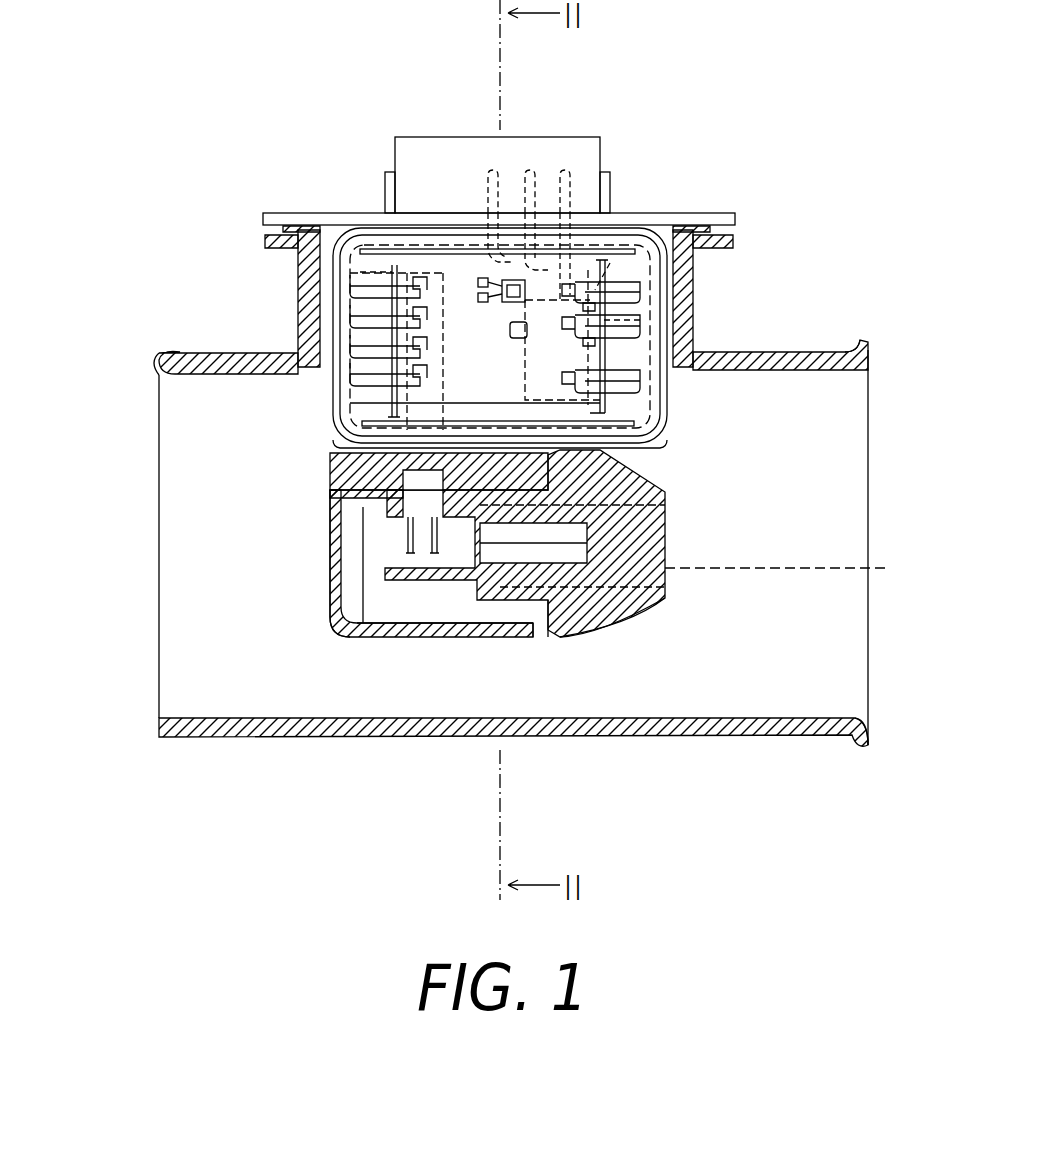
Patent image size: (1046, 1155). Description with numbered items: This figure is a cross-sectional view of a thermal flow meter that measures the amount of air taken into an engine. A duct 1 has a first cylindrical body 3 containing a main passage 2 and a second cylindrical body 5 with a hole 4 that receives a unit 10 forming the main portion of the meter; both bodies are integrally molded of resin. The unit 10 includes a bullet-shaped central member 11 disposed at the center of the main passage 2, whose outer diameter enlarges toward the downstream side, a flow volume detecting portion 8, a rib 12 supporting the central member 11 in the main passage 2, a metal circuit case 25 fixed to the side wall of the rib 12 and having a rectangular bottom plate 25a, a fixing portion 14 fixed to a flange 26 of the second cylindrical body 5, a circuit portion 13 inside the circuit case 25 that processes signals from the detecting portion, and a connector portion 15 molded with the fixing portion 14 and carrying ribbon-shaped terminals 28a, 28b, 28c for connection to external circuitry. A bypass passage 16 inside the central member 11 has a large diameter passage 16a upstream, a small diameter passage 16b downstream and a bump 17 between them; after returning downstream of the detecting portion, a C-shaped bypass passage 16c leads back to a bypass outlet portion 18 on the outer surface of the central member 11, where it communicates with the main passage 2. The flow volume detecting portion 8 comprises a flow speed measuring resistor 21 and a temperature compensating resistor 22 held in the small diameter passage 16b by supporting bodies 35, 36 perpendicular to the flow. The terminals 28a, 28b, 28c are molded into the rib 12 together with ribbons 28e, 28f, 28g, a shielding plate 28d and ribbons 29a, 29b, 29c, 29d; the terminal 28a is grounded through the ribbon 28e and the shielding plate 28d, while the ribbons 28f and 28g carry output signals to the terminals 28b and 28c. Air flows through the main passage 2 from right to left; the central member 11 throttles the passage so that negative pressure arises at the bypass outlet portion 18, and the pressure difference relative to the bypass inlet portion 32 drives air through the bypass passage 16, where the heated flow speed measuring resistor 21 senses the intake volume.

The duct 1 is at (882, 436).
The main passage 2 is at (852, 472).
The first cylindrical body 3 is at (863, 345).
The hole 4 is at (650, 250).
The second cylindrical body 5 is at (688, 262).
The flow volume detecting portion 8 is at (390, 557).
The unit 10 is at (308, 202).
The central member 11 is at (655, 612).
The rib 12 is at (330, 477).
The circuit portion 13 is at (455, 347).
The fixing portion 14 is at (268, 222).
The connector portion 15 is at (415, 135).
The bypass passage 16 is at (605, 612).
The large diameter passage 16a is at (888, 566).
The small diameter passage 16b is at (345, 572).
The bypass passage 16c is at (487, 622).
The bump 17 is at (522, 615).
The bypass outlet portion 18 is at (540, 626).
The flow speed measuring resistor 21 is at (435, 590).
The temperature compensating resistor 22 is at (408, 608).
The circuit case 25 is at (600, 352).
The bottom plate 25a is at (612, 412).
The flange 26 is at (280, 247).
The terminal 28a is at (490, 165).
The terminal 28b is at (540, 165).
The terminal 28c is at (568, 168).
The shielding plate 28d is at (362, 272).
The ribbon 28e is at (612, 385).
The ribbon 28f is at (640, 320).
The ribbon 28g is at (615, 262).
The ribbon 29a is at (340, 397).
The ribbon 29b is at (345, 414).
The ribbon 29c is at (345, 432).
The ribbon 29d is at (345, 443).
The bypass inlet portion 32 is at (590, 540).
The supporting body 35 is at (413, 595).
The supporting body 36 is at (430, 528).